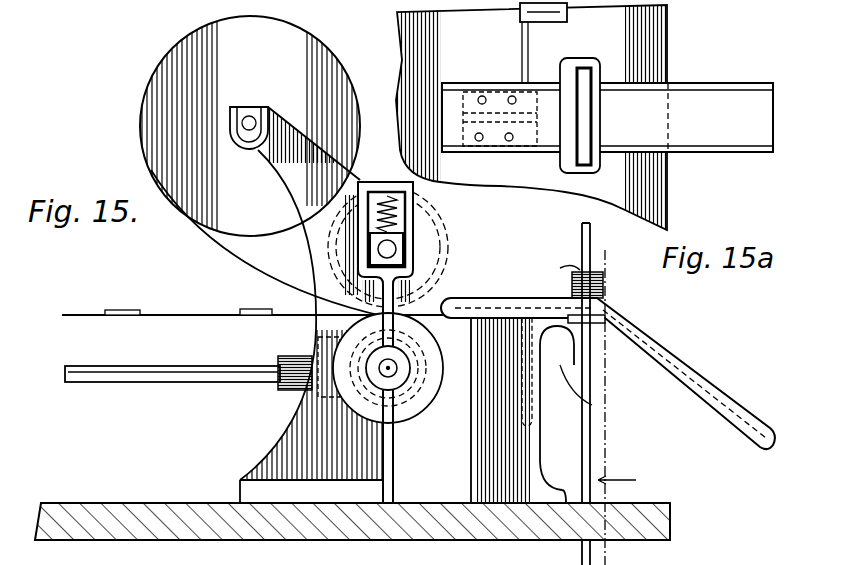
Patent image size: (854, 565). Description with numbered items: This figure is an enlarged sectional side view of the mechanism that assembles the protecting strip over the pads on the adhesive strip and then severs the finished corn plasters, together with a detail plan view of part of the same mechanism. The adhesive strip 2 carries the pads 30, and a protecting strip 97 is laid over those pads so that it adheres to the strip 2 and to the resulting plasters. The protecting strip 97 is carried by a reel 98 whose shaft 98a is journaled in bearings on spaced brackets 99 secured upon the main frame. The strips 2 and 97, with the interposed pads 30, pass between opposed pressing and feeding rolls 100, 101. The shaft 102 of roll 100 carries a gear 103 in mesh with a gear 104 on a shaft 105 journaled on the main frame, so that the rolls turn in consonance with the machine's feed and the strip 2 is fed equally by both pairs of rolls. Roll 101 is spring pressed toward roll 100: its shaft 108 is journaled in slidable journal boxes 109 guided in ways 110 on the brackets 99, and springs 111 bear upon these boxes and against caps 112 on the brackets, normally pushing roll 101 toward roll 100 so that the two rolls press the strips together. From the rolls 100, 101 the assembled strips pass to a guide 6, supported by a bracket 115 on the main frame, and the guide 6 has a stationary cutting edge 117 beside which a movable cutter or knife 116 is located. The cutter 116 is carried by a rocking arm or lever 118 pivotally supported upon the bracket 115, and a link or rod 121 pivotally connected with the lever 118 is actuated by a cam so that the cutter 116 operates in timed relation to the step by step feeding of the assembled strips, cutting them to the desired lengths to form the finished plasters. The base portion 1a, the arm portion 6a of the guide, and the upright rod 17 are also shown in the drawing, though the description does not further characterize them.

In FIG. 15A, the base / wall 1a is at (531, 120).
In FIG. 15, the base / wall 1a is at (138, 503).
In FIG. 15, the strip 2 is at (88, 316).
In FIG. 15A, the guide 6 is at (607, 117).
In FIG. 15, the guide 6 is at (497, 302).
In FIG. 15A, the inclined arm of bar 6a is at (736, 113).
In FIG. 15, the inclined arm of bar 6a is at (712, 378).
In FIG. 15, the rod 17 is at (592, 256).
In FIG. 15, the pads 30 is at (256, 309).
In FIG. 15, the protecting strip 97 is at (300, 300).
In FIG. 15, the reel 98 is at (250, 126).
In FIG. 15, the shaft 98a is at (248, 130).
In FIG. 15, the brackets 99 is at (269, 212).
In FIG. 15, the pressing and feeding roll 100 is at (415, 420).
In FIG. 15, the pressing and feeding roll 101 is at (430, 232).
In FIG. 15, the shaft 102 is at (393, 374).
In FIG. 15, the gear 103 is at (432, 356).
In FIG. 15, the gear 104 is at (338, 350).
In FIG. 15, the shaft 105 is at (188, 363).
In FIG. 15, the shaft 108 is at (396, 249).
In FIG. 15, the slidable journal boxes 109 is at (405, 258).
In FIG. 15, the ways 110 is at (398, 226).
In FIG. 15, the springs 111 is at (410, 210).
In FIG. 15, the caps 112 is at (386, 182).
In FIG. 15, the bracket 115 is at (531, 409).
In FIG. 15, the cutter or knife 116 is at (603, 275).
In FIG. 15A, the stationary cutting edge 117 is at (593, 125).
In FIG. 15, the stationary cutting edge 117 is at (593, 388).
In FIG. 15, the rocking arm or lever 118 is at (580, 242).
In FIG. 15, the link or rod 121 is at (637, 447).